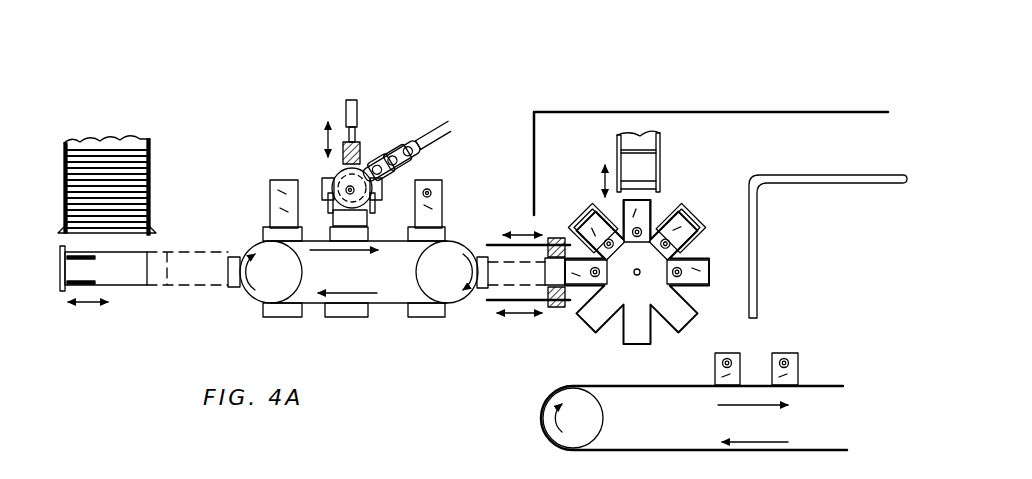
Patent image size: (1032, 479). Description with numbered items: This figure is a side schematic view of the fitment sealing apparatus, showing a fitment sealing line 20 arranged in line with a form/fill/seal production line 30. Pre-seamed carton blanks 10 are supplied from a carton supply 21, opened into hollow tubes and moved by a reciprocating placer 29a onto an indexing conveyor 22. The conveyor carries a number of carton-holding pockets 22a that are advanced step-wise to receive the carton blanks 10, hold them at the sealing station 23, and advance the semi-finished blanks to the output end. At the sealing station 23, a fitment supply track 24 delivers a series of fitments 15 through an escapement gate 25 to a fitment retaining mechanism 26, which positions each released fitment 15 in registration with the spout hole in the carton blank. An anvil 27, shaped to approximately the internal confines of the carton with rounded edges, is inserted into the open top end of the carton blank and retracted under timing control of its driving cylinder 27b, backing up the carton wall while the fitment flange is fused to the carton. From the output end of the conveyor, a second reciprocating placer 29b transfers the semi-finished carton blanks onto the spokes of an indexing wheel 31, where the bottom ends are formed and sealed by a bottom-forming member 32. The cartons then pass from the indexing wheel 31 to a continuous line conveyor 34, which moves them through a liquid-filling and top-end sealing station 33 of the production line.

The carton blank 10 is at (137, 247).
The fitment 15 is at (420, 150).
The fitment sealing line 20 is at (258, 170).
The carton supply 21 is at (152, 173).
The indexing conveyor 22 is at (393, 307).
The carton-holding pockets 22a is at (266, 230).
The sealing station 23 is at (312, 160).
The fitment supply track 24 is at (436, 122).
The escapement gate 25 is at (398, 170).
The fitment retaining mechanism 26 is at (372, 208).
The anvil 27 is at (360, 150).
The driving cylinder 27b is at (353, 100).
The reciprocating placer 29a is at (57, 290).
The reciprocating placer 29b is at (558, 303).
The form/fill/seal production line 30 is at (575, 147).
The indexing wheel 31 is at (692, 308).
The bottom-forming member 32 is at (650, 167).
The liquid-filling and top-end sealing station 33 is at (790, 266).
The continuous line conveyor 34 is at (627, 390).